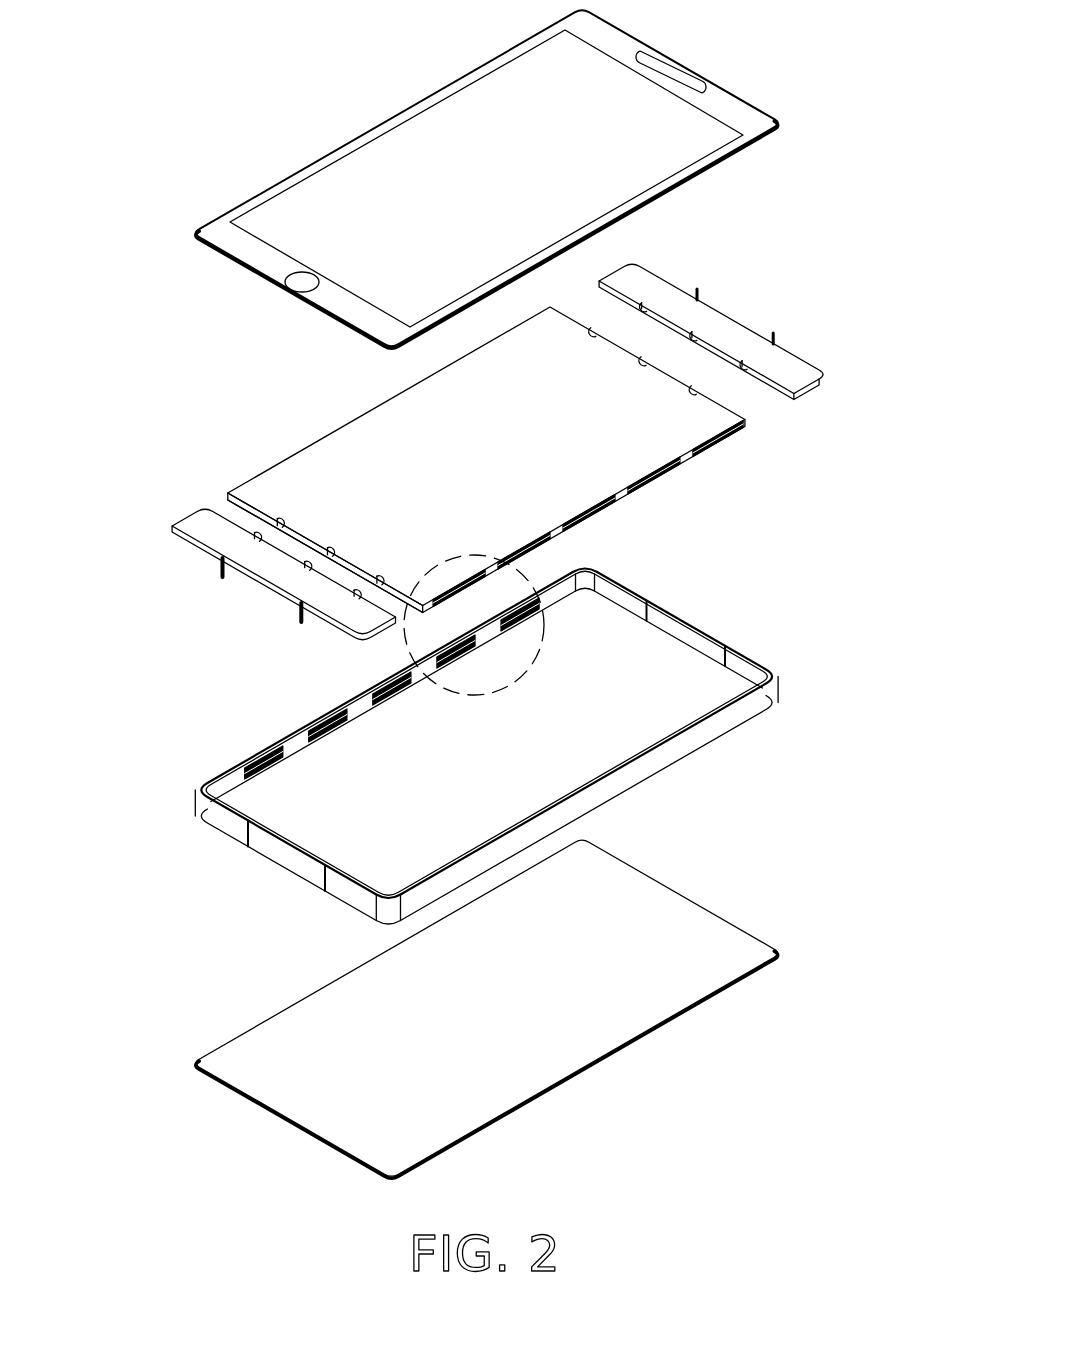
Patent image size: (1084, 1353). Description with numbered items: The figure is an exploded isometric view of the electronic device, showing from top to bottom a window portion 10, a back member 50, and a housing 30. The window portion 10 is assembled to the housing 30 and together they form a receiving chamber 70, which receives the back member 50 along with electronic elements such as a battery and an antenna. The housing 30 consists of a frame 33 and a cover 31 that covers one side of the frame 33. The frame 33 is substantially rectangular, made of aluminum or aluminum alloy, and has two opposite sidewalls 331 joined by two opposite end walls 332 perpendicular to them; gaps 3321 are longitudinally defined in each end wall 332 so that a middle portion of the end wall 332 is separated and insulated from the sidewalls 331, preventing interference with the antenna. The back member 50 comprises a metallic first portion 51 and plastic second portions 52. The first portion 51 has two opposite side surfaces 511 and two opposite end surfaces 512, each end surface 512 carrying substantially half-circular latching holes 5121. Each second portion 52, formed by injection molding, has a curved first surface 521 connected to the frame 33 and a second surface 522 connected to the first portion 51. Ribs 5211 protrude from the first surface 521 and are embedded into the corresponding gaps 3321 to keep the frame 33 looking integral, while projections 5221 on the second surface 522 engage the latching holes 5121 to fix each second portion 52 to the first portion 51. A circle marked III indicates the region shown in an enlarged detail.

The window portion 10 is at (725, 100).
The housing 30 is at (781, 778).
The cover 31 is at (685, 871).
The frame 33 is at (496, 756).
The sidewall 331 is at (727, 722).
The end wall 332 is at (280, 852).
The gap 3321 is at (235, 837).
The back member 50 is at (706, 264).
The first portion 51 is at (451, 460).
The side surface 511 is at (622, 497).
The end surface 512 is at (285, 521).
The latching hole 5121 is at (281, 518).
The second portion 52 is at (731, 353).
The first surface 521 is at (445, 457).
The second surface 522 is at (767, 382).
The rib 5211 is at (210, 590).
The projection 5221 is at (250, 536).
The receiving chamber 70 is at (310, 773).
The detail view region III is at (410, 647).